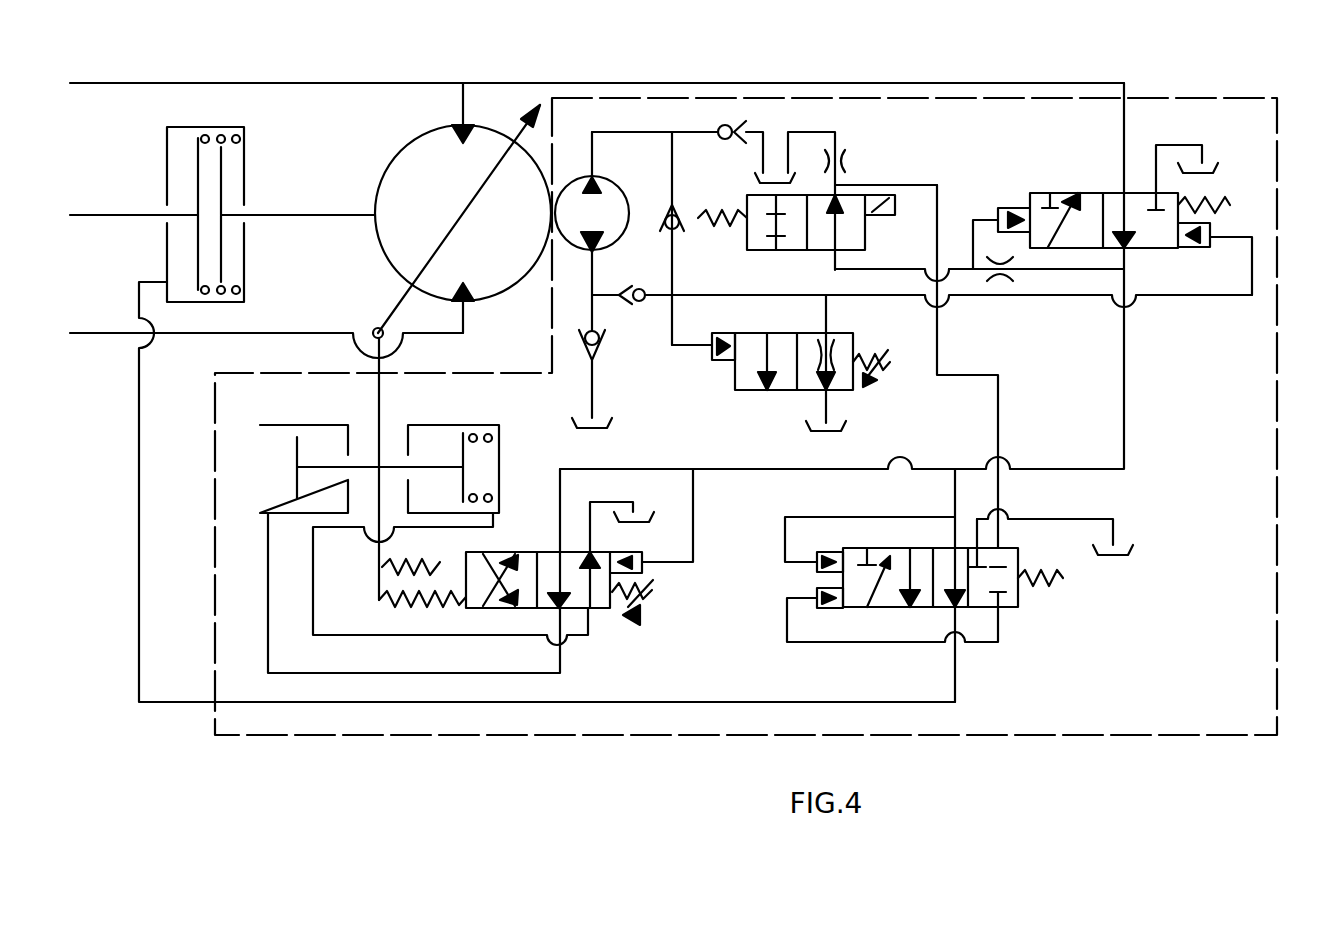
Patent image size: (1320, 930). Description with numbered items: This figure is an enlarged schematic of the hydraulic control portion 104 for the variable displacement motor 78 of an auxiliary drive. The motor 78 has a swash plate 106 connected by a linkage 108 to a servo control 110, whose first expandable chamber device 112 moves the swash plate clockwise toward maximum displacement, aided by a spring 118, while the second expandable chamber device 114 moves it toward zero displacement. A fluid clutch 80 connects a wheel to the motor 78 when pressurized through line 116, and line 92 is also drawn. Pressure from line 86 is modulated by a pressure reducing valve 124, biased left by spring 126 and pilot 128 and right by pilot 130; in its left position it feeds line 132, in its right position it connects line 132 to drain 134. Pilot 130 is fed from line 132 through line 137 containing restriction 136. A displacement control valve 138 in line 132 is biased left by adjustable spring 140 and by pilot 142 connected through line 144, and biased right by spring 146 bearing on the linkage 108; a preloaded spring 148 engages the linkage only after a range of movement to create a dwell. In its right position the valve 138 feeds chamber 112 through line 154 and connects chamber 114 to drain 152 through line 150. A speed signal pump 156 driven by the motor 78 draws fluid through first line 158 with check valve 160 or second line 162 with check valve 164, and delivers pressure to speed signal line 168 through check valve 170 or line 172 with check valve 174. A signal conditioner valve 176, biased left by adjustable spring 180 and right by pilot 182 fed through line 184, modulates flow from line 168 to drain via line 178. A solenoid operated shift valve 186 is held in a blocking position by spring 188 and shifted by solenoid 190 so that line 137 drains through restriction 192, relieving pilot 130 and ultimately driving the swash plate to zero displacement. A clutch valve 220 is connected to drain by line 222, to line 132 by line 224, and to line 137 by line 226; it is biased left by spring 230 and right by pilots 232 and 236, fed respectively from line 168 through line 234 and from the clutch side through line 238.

The motor 78 is at (412, 143).
The fluid clutch 80 is at (244, 168).
The line 86 is at (205, 83).
The return line 92 is at (96, 333).
The control portion 104 is at (1275, 438).
The swash plate 106 is at (401, 300).
The linkage 108 is at (381, 396).
The servo control 110 is at (306, 416).
The first expandable chamber device 112 is at (500, 468).
The second expandable chamber device 114 is at (260, 467).
The line 116 is at (139, 545).
The spring 118 is at (483, 434).
The pressure reducing valve 124 is at (1148, 116).
The spring 126 is at (1222, 205).
The pilot 128 is at (1192, 252).
The pilot 130 is at (1012, 206).
The line 132 is at (1124, 381).
The drain 134 is at (1172, 146).
The restriction 136 is at (1005, 274).
The line 137 is at (1077, 269).
The displacement control valve 138 is at (585, 651).
The pre-set adjustable spring 140 is at (654, 600).
The pilot 142 is at (644, 560).
The line 144 is at (696, 480).
The spring 146 is at (446, 594).
The preloaded spring 148 is at (402, 570).
The line 150 is at (268, 600).
The drain 152 is at (606, 498).
The line 154 is at (315, 598).
The pump 156 is at (607, 185).
The first line 158 is at (590, 276).
The check valve 160 is at (598, 348).
The second line 162 is at (620, 128).
The check valve 164 is at (740, 125).
The speed signal line 168 is at (768, 295).
The check valve 170 is at (637, 288).
The line 172 is at (672, 277).
The check valve 174 is at (683, 213).
The signal conditioner valve 176 is at (724, 397).
The line 178 is at (828, 313).
The adjustable spring 180 is at (890, 368).
The pilot 182 is at (742, 326).
The line 184 is at (694, 350).
The solenoid operated shift valve 186 is at (882, 232).
The spring 188 is at (724, 228).
The solenoid 190 is at (900, 198).
The restriction 192 is at (848, 163).
The clutch valve 220 is at (1018, 625).
The line 222 is at (1078, 519).
The line 224 is at (953, 517).
The line 226 is at (1000, 402).
The spring 230 is at (1063, 583).
The pilot 232 is at (825, 552).
The line 234 is at (785, 545).
The pilot 236 is at (829, 612).
The line 238 is at (900, 645).